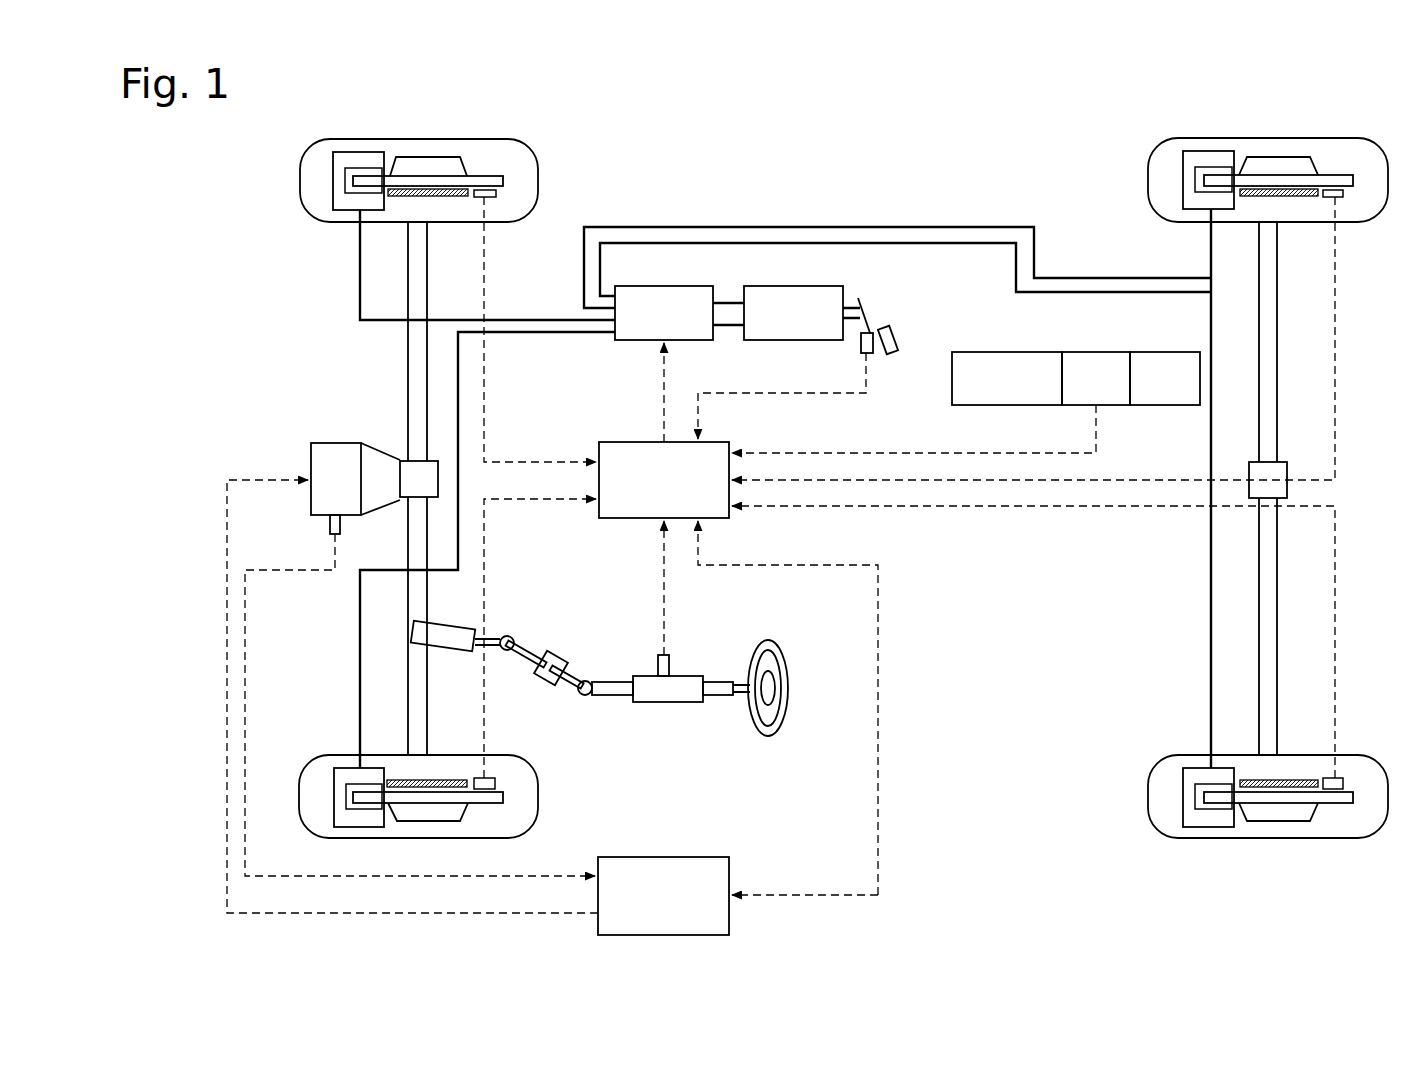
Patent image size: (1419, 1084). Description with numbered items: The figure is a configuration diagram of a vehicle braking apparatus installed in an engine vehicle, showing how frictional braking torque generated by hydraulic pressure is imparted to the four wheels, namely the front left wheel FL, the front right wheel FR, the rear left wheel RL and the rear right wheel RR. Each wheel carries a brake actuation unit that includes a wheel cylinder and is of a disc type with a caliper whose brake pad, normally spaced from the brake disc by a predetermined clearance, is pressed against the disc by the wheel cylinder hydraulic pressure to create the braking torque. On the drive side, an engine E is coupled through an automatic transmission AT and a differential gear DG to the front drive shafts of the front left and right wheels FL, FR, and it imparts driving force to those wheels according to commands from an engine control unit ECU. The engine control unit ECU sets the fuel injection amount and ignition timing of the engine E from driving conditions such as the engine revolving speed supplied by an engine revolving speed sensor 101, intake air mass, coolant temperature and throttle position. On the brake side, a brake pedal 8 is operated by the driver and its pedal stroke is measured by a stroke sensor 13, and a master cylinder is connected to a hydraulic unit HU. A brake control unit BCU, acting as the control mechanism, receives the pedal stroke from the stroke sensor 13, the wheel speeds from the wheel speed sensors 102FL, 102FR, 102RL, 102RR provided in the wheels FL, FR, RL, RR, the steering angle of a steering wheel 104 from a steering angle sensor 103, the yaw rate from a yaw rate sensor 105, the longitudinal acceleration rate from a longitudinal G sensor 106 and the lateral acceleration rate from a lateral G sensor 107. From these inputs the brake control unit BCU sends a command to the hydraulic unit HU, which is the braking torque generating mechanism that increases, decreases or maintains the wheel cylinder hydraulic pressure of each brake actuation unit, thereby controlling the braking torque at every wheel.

The front right wheel FR is at (300, 200).
The front left wheel FL is at (540, 795).
The rear right wheel RR is at (1150, 180).
The rear left wheel RL is at (1150, 800).
The wheel speed sensor 102FR is at (500, 192).
The wheel speed sensor 102FL is at (498, 785).
The wheel speed sensor 102RR is at (1335, 200).
The wheel speed sensor 102RL is at (1338, 778).
The hydraulic unit HU is at (640, 340).
The stroke sensor 13 is at (862, 343).
The brake pedal 8 is at (893, 355).
The yaw rate sensor 105 is at (1008, 352).
The longitudinal G sensor 106 is at (1095, 352).
The lateral G sensor 107 is at (1165, 405).
The brake control unit BCU is at (630, 442).
The engine E is at (318, 462).
The automatic transmission AT is at (372, 460).
The differential gear DG is at (415, 470).
The engine revolving speed sensor 101 is at (326, 522).
The steering angle sensor 103 is at (657, 665).
The steering wheel 104 is at (780, 646).
The engine control unit ECU is at (712, 857).